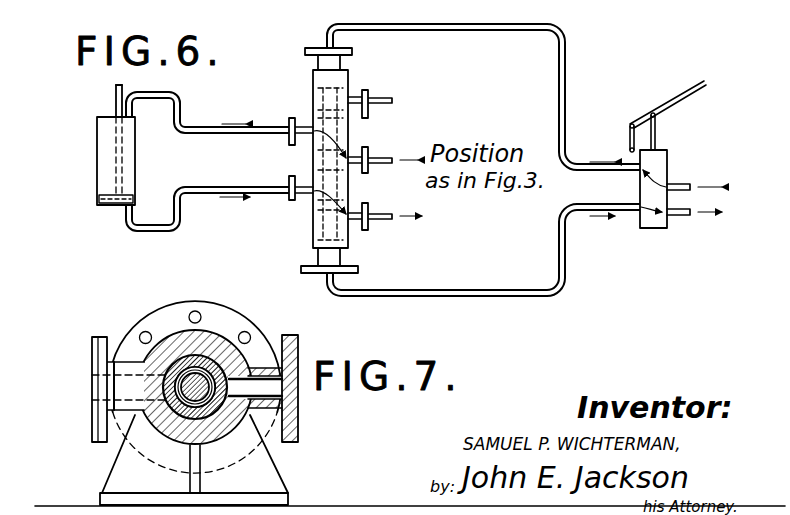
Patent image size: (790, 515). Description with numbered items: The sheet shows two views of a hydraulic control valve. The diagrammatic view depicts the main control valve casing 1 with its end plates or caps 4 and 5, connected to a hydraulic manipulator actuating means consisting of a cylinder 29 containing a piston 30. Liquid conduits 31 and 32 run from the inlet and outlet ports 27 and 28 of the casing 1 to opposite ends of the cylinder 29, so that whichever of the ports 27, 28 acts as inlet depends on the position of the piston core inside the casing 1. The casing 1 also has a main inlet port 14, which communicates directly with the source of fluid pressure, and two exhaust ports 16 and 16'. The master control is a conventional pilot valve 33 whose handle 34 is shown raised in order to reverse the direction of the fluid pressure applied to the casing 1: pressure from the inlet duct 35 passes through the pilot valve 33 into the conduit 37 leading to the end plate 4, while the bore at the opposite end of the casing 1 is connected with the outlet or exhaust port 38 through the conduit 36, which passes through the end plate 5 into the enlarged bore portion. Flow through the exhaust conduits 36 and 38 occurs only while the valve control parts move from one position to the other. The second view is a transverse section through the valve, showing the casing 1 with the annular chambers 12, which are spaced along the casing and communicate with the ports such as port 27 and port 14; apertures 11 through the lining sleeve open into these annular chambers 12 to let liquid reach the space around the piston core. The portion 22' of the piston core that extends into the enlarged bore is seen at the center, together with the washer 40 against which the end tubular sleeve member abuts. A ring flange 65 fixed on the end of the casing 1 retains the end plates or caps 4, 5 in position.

In FIG. 6, the casing 1 is at (312, 157).
In FIG. 7, the casing 1 is at (166, 344).
In FIG. 6, the end plate 4 is at (311, 50).
In FIG. 6, the end plate 5 is at (341, 274).
In FIG. 7, the apertures 11 is at (206, 356).
In FIG. 7, the annular chambers 12 is at (227, 342).
In FIG. 6, the main inlet port 14 is at (353, 164).
In FIG. 7, the main inlet port 14 is at (287, 391).
In FIG. 6, the exhaust port 16 is at (370, 115).
In FIG. 6, the exhaust port 16' is at (385, 229).
In FIG. 7, the piston core portion 22' is at (167, 432).
In FIG. 6, the inlet and outlet port 27 is at (306, 130).
In FIG. 7, the inlet and outlet port 27 is at (123, 388).
In FIG. 6, the inlet and outlet port 28 is at (306, 192).
In FIG. 6, the cylinder 29 is at (101, 145).
In FIG. 6, the piston 30 is at (112, 196).
In FIG. 6, the conduit 31 is at (114, 98).
In FIG. 6, the conduit 32 is at (203, 194).
In FIG. 6, the pilot valve 33 is at (640, 187).
In FIG. 6, the pilot valve handle 34 is at (684, 98).
In FIG. 6, the inlet duct 35 is at (686, 185).
In FIG. 6, the conduit 36 is at (330, 285).
In FIG. 6, the conduit 37 is at (339, 30).
In FIG. 6, the outlet or exhaust port 38 is at (687, 215).
In FIG. 7, the washer 40 is at (212, 400).
In FIG. 7, the ring flange 65 is at (178, 314).